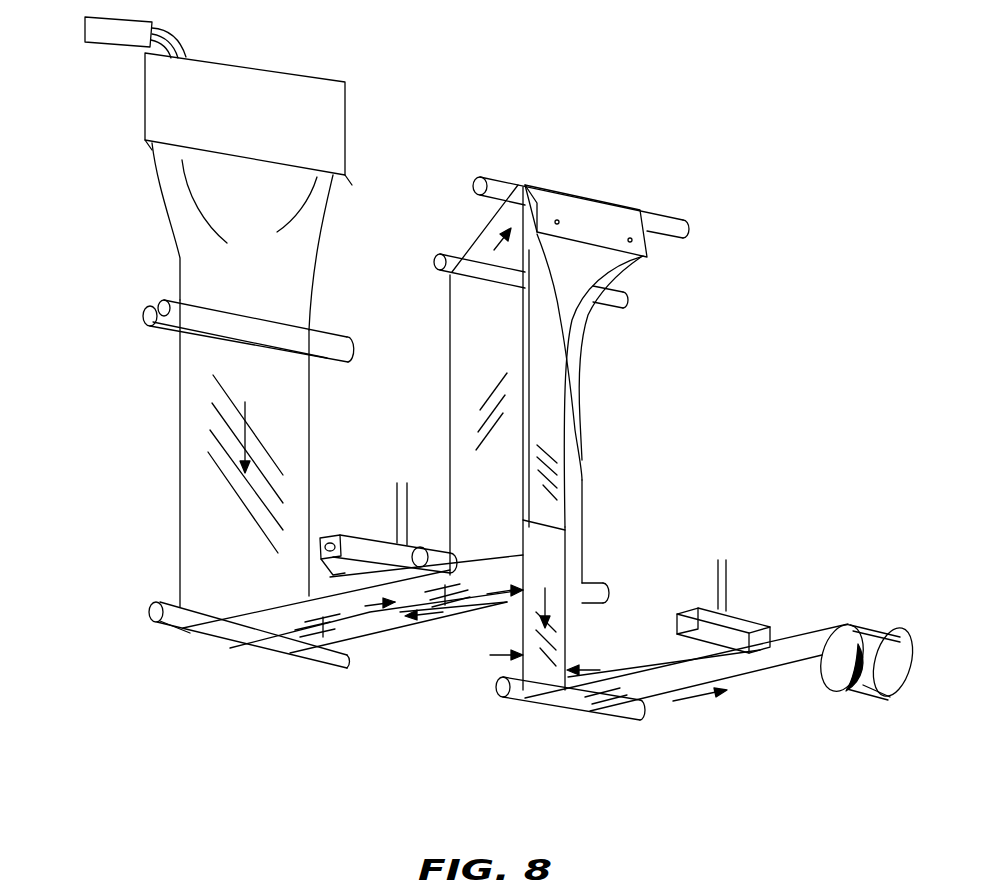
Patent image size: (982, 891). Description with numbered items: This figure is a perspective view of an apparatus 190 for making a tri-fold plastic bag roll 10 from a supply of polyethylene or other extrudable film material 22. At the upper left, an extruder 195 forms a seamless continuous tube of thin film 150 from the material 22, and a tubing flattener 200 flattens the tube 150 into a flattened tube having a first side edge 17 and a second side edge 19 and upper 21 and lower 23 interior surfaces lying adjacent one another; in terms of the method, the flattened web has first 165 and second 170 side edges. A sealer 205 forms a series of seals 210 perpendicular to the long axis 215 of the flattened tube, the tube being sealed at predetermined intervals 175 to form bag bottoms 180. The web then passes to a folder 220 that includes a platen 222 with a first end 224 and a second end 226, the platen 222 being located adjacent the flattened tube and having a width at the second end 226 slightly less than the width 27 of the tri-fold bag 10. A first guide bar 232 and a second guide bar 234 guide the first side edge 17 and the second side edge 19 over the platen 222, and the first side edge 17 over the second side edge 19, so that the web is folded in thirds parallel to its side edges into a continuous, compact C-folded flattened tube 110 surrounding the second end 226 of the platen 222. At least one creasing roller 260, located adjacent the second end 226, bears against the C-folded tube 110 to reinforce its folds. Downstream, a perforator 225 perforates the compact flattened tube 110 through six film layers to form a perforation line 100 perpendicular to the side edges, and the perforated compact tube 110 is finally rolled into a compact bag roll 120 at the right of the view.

The tri-fold plastic bag roll 10 is at (890, 600).
The first side edge 17 is at (448, 327).
The second side edge 19 is at (585, 470).
The upper interior surface 21 is at (450, 356).
The extrudable film material 22 is at (115, 38).
The lower interior surface 23 is at (467, 410).
The width of the tri-fold bag 27 is at (597, 672).
The perforation line 100 is at (737, 673).
The compact C-folded flattened tube 110 is at (553, 568).
The compact bag roll 120 is at (872, 688).
The continuous tube of thin film 150 is at (315, 210).
The first side edge 165 is at (180, 440).
The second side edge 170 is at (313, 443).
The predetermined intervals 175 is at (470, 607).
The bag bottoms 180 is at (493, 587).
The apparatus 190 is at (703, 277).
The extruder 195 is at (302, 112).
The tubing flattener 200 is at (322, 333).
The sealer 205 is at (357, 547).
The seals 210 is at (393, 617).
The long axis 215 is at (280, 638).
The folder 220 is at (648, 367).
The platen 222 is at (543, 470).
The first end 224 is at (588, 232).
The perforator 225 is at (765, 628).
The second end 226 is at (547, 525).
The first guide bar 232 is at (543, 402).
The second guide bar 234 is at (570, 320).
The creasing roller 260 is at (503, 693).